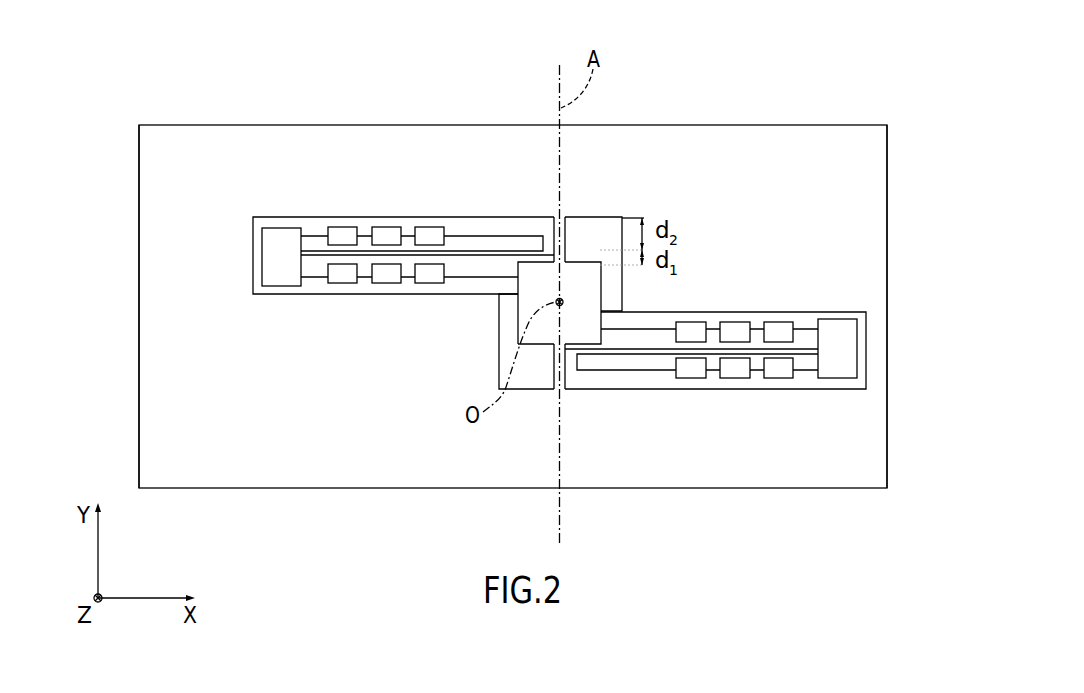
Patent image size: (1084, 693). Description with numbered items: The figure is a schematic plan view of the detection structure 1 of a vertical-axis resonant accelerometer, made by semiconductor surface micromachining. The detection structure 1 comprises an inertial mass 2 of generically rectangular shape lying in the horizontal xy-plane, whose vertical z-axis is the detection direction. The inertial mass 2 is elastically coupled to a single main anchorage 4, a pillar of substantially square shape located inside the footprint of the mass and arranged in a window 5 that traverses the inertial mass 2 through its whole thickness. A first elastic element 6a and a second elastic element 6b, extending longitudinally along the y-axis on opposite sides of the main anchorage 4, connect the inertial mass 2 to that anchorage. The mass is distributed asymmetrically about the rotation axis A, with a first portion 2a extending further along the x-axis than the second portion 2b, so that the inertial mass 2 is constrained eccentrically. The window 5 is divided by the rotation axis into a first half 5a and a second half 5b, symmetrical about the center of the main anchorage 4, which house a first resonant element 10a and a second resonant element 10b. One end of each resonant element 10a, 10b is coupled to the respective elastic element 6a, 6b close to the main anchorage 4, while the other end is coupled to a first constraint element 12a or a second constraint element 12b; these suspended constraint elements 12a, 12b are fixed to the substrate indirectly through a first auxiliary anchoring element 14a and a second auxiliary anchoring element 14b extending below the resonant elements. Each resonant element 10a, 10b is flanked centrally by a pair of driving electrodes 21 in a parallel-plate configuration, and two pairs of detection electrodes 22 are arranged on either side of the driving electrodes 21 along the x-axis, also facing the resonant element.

The detection structure 1 is at (803, 112).
The inertial mass 2 is at (182, 97).
The first portion 2a is at (157, 188).
The second portion 2b is at (860, 239).
The main anchorage 4 is at (590, 302).
The window 5 is at (562, 238).
The first half 5a is at (490, 222).
The second half 5b is at (668, 379).
The first elastic element 6a is at (602, 233).
The second elastic element 6b is at (553, 371).
The first resonant element 10a is at (403, 234).
The second resonant element 10b is at (715, 355).
The first constraint element 12a is at (283, 228).
The second constraint element 12b is at (848, 345).
The first auxiliary anchoring element 14a is at (480, 279).
The second auxiliary anchoring element 14b is at (613, 360).
The driving electrodes 21 is at (383, 228).
The detection electrodes 22 is at (338, 228).